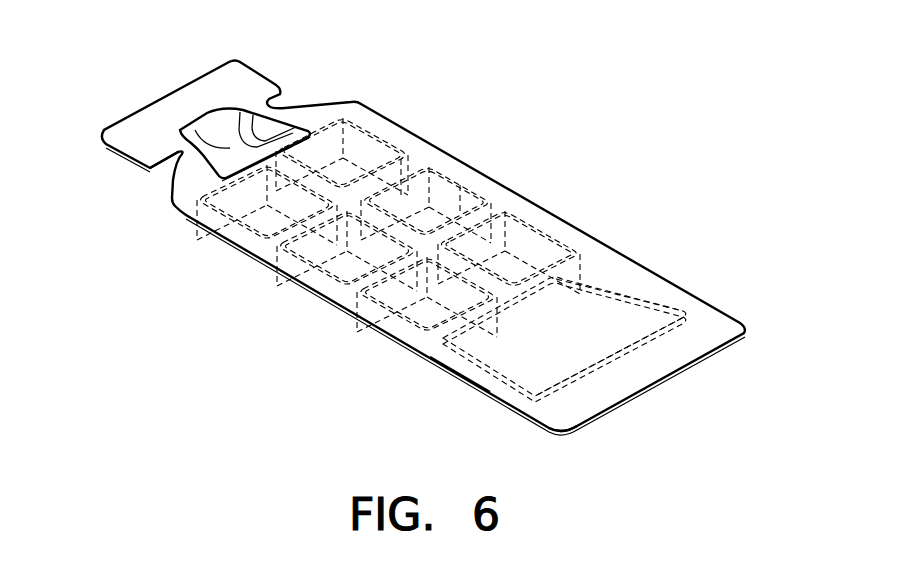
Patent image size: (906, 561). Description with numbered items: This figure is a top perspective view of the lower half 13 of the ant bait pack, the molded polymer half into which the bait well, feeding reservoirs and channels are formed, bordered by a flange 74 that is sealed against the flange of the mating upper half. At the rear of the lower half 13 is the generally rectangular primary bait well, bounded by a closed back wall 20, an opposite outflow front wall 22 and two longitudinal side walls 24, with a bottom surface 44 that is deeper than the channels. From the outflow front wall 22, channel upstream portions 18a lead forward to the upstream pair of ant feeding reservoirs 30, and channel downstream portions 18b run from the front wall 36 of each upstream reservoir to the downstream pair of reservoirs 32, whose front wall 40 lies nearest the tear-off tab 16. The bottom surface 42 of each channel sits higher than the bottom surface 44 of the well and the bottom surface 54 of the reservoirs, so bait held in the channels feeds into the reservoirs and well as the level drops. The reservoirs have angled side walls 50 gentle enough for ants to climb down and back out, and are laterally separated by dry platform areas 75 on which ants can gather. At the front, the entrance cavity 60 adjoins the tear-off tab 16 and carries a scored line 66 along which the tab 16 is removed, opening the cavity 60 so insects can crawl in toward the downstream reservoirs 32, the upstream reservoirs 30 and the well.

The lower half 13 is at (405, 252).
The tear-off tab 16 is at (233, 110).
The entrance cavity 60 is at (234, 127).
The scored line 66 is at (178, 178).
The downstream pair of ant feeding reservoirs 32 is at (376, 113).
The front wall of downstream pair of reservoirs 40 is at (347, 203).
The dry platform areas 75 is at (403, 168).
The downstream portion of channel 18b is at (410, 176).
The angled side walls of feeding reservoirs 50 is at (472, 202).
The upstream portion of channel 18a is at (500, 226).
The outflow front wall 22 is at (523, 278).
The side walls of primary bait well 24 is at (650, 312).
The bottom surface of bait storage well 44 is at (563, 339).
The bottom surface of reservoirs 54 is at (260, 230).
The front wall of upstream pair of reservoirs 36 is at (325, 262).
The upstream pair of ant feeding reservoirs 30 is at (367, 304).
The bottom surface of channel 42 is at (405, 298).
The flange of lower half 74 is at (460, 370).
The closed back wall 20 is at (570, 380).